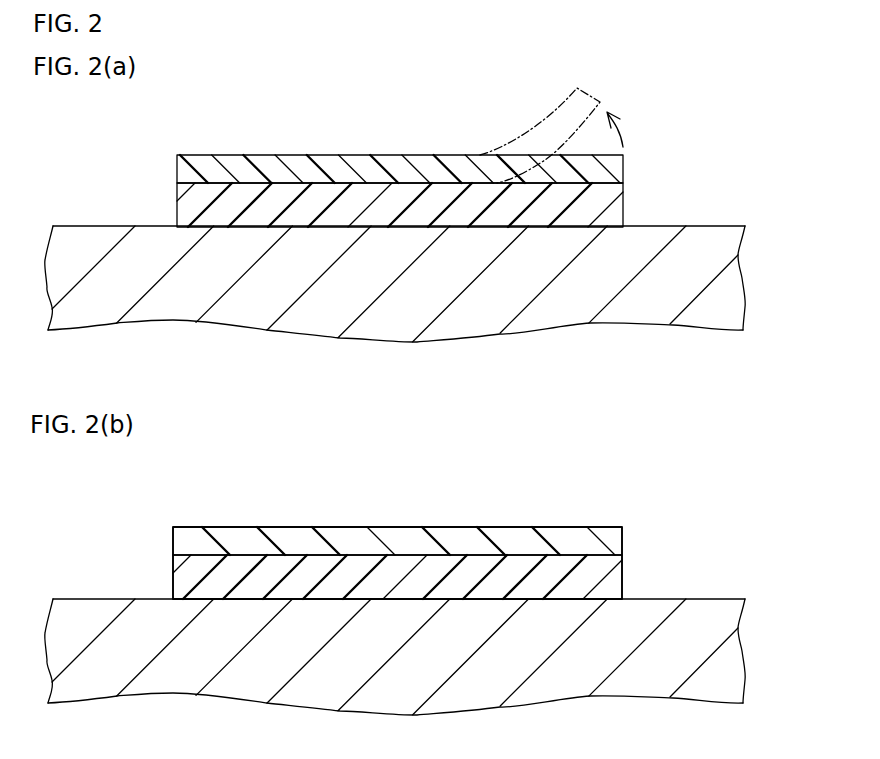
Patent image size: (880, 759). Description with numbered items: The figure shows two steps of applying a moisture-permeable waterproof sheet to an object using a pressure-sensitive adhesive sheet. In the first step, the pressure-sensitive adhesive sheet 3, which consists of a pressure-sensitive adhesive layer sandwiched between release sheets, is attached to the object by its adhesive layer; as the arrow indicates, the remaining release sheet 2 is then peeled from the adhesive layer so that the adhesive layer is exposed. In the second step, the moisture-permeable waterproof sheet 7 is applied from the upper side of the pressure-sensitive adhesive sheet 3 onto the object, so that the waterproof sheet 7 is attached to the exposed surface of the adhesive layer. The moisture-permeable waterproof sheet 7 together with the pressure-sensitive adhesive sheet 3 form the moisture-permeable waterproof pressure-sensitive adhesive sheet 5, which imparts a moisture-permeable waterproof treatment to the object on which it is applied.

The release sheet 2 is at (600, 95).
The pressure-sensitive adhesive sheet 3 is at (160, 582).
The moisture-permeable waterproof pressure-sensitive adhesive sheet 5 is at (156, 504).
The moisture-permeable waterproof sheet 7 is at (622, 543).